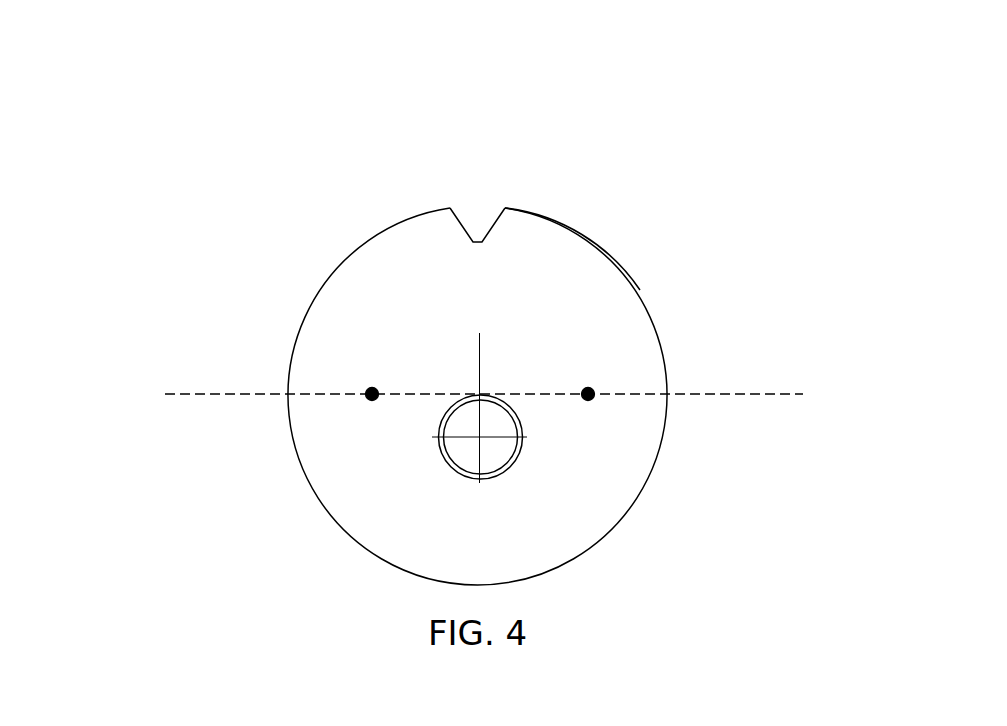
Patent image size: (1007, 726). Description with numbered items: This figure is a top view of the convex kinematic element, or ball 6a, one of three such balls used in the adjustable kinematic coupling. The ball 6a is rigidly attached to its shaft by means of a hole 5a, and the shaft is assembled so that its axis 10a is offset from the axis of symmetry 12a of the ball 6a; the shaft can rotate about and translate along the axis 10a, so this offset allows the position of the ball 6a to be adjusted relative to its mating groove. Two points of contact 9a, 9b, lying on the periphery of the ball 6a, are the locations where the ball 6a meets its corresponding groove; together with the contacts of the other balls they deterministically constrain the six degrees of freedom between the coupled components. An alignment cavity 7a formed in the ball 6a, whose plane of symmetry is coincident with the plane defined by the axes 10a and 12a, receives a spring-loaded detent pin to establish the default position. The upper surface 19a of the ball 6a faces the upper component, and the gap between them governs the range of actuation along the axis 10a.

The hole 5a is at (447, 413).
The convex element 6a is at (350, 250).
The alignment cavity 7a is at (495, 223).
The point of contact 9a is at (365, 387).
The point of contact 9b is at (588, 394).
The axis of shaft 10a is at (480, 438).
The axis of symmetry 12a is at (480, 394).
The upper surface 19a is at (547, 245).